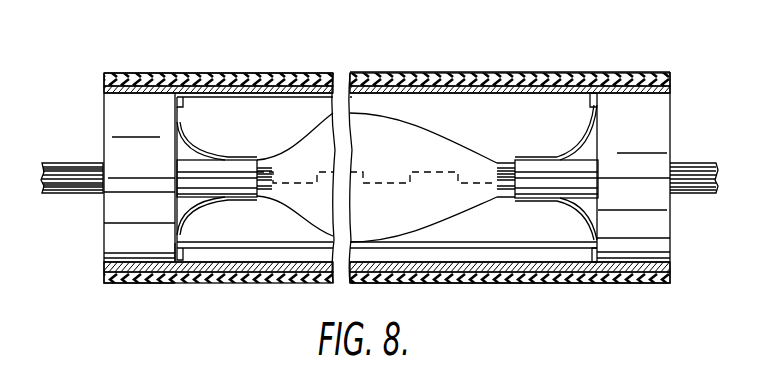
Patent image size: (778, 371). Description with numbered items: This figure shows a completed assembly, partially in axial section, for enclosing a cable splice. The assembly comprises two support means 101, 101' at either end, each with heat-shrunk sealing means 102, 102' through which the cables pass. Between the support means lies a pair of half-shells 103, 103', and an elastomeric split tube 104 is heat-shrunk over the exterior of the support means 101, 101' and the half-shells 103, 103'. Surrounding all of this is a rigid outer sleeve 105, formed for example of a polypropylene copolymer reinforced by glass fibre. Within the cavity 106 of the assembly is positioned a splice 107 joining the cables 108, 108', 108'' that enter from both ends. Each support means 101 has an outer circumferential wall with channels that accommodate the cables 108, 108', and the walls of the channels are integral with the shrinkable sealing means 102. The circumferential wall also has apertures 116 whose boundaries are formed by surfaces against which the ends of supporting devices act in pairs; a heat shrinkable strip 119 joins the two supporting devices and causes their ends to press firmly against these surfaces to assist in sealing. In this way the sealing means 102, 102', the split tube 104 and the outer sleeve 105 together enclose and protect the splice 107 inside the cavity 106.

The support means 101 is at (113, 178).
The support means 101' is at (534, 177).
The heat-shrunk sealing means 102 is at (224, 171).
The heat-shrunk sealing means 102' is at (547, 172).
The half-shell 103 is at (509, 178).
The half-shell 103' is at (219, 198).
The elastomeric split tube 104 is at (108, 84).
The rigid outer sleeve 105 is at (245, 73).
The cavity 106 is at (295, 128).
The splice 107 is at (440, 122).
The cable 108 is at (66, 153).
The cable 108' is at (73, 177).
The cable 108'' is at (697, 155).
The aperture 116 is at (140, 178).
The heat shrinkable strip 119 is at (153, 102).